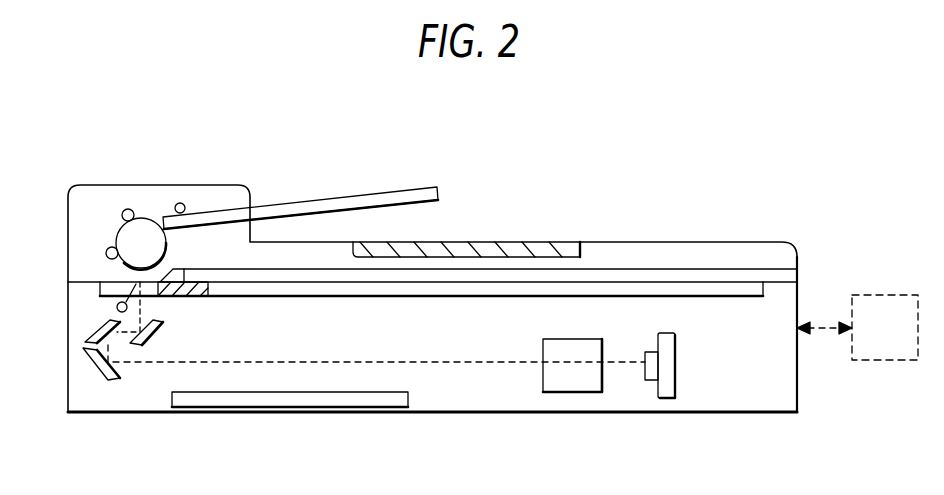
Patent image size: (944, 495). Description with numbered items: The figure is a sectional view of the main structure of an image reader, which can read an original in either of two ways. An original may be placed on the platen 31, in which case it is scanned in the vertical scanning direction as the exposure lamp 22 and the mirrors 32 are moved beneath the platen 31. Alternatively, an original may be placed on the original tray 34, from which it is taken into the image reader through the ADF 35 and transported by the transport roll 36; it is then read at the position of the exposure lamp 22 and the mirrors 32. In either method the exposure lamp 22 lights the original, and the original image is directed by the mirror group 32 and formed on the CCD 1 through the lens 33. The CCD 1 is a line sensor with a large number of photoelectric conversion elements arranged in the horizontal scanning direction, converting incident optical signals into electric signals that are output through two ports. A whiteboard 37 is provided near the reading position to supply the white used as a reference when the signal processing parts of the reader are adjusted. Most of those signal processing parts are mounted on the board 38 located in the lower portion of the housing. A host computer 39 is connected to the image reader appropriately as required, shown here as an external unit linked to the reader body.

The CCD 1 is at (669, 399).
The exposure lamp 22 is at (116, 307).
The platen 31 is at (616, 284).
The mirror group 32 is at (90, 369).
The lens 33 is at (575, 393).
The original tray 34 is at (385, 188).
The ADF 35 is at (81, 176).
The transport roll 36 is at (122, 213).
The whiteboard 37 is at (194, 283).
The board 38 is at (363, 408).
The host computer 39 is at (884, 295).